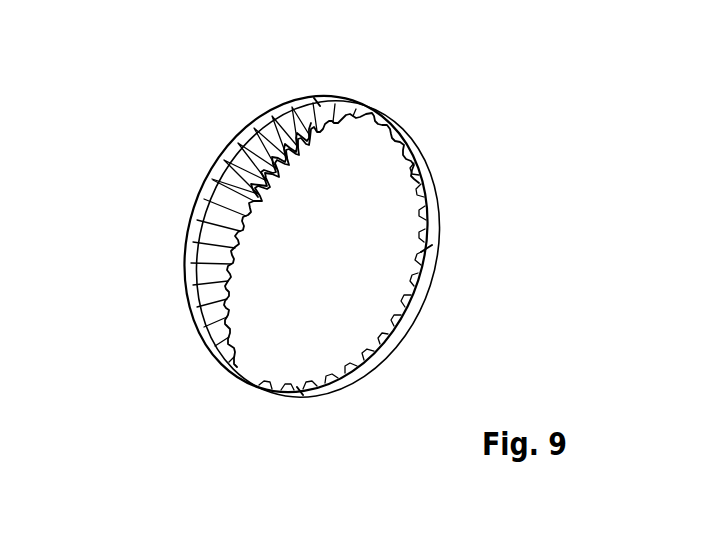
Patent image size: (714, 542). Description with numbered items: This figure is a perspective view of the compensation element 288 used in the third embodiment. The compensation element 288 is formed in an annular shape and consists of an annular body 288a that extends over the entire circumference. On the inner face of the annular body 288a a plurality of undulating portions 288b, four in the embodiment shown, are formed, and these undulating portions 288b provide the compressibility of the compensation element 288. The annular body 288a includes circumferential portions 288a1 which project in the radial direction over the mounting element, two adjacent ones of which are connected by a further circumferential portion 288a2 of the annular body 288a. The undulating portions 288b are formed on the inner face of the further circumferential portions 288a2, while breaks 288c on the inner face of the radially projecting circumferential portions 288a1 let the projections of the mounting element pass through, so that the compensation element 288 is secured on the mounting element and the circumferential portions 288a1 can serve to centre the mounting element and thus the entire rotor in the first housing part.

The compensation element 288 is at (326, 255).
The annular body 288a is at (387, 335).
The circumferential portion 288a1 is at (320, 104).
The further circumferential portion 288a2 is at (427, 178).
The undulating portion 288b is at (210, 318).
The wavy inner edge 288c is at (327, 110).